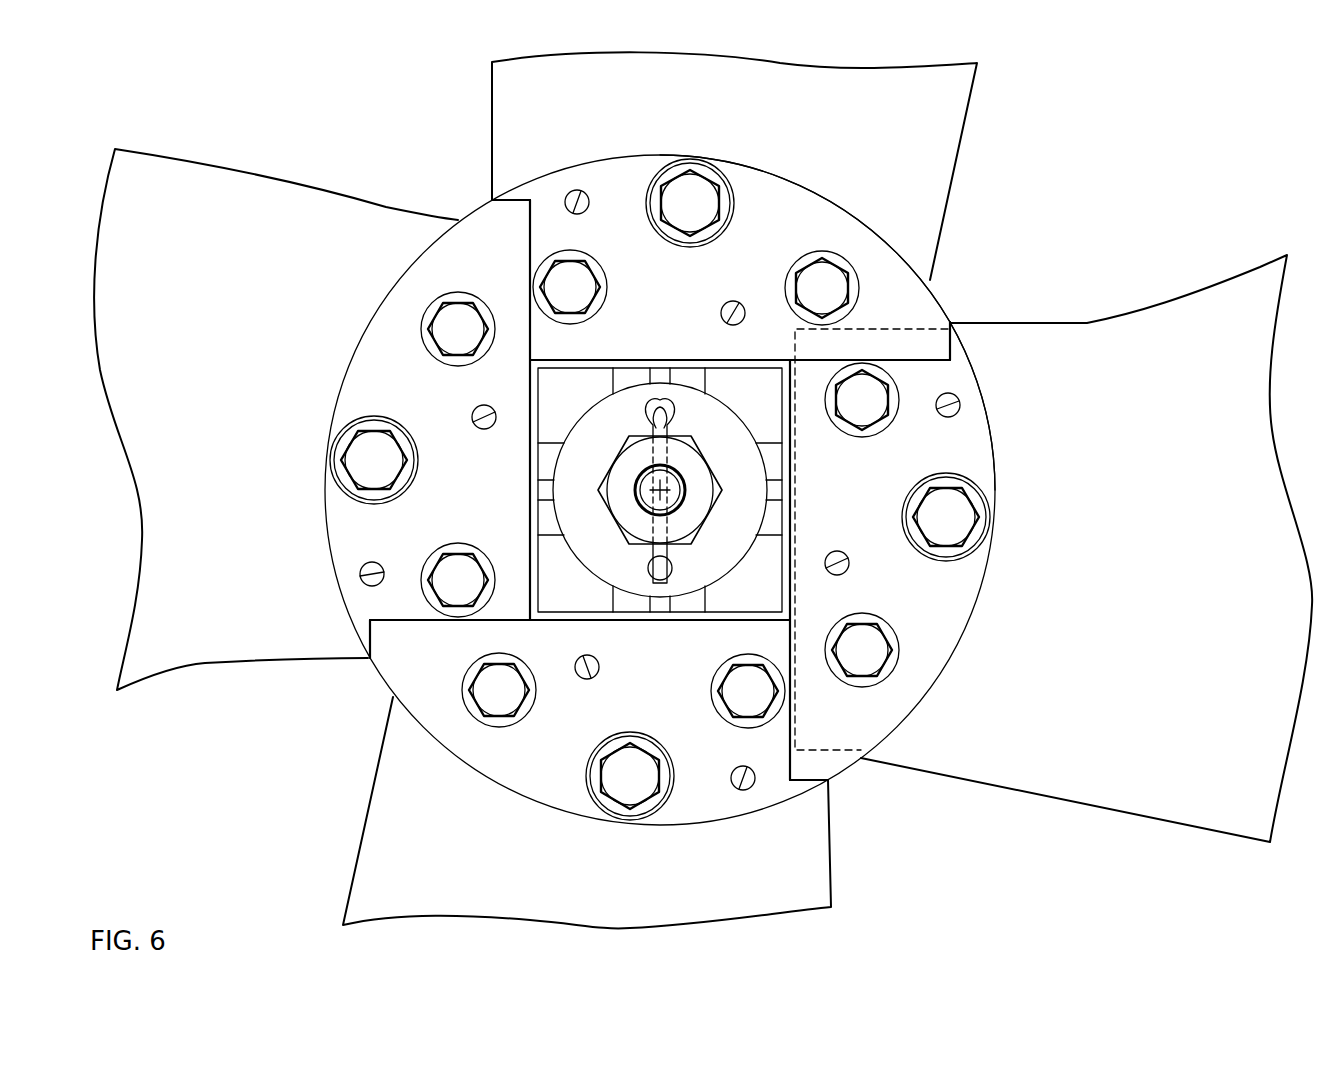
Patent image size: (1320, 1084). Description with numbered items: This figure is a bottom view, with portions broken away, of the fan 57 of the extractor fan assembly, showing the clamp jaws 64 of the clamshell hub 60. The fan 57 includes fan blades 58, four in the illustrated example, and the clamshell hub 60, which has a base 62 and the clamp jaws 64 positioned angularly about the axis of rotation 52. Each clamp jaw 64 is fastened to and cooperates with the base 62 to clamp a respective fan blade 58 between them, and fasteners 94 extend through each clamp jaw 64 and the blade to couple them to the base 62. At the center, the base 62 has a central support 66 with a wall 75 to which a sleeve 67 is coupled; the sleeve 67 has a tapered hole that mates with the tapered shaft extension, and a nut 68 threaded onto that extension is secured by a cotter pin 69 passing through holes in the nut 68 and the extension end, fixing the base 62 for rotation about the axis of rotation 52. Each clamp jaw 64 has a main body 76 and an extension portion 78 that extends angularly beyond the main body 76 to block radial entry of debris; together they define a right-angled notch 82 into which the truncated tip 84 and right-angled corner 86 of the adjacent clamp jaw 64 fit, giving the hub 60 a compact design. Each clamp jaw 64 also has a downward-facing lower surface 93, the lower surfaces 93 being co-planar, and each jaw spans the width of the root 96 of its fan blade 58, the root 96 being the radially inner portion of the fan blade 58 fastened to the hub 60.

The axis of rotation 52 is at (653, 492).
The fan 57 is at (981, 904).
The fan blades 58 is at (138, 170).
The clamshell hub 60 is at (1055, 231).
The base 62 is at (768, 573).
The clamp jaws 64 is at (803, 193).
The central support 66 is at (745, 376).
The sleeve 67 is at (711, 545).
The nut 68 is at (625, 465).
The cotter pin 69 is at (655, 395).
The wall 75 is at (718, 383).
The main body 76 is at (645, 165).
The extension portion 78 is at (500, 185).
The right-angled notch 82 is at (527, 225).
The truncated tip 84 is at (525, 195).
The right-angled corner 86 is at (200, 190).
The lower surface 93 is at (843, 228).
The fasteners 94 is at (813, 287).
The root 96 is at (893, 324).